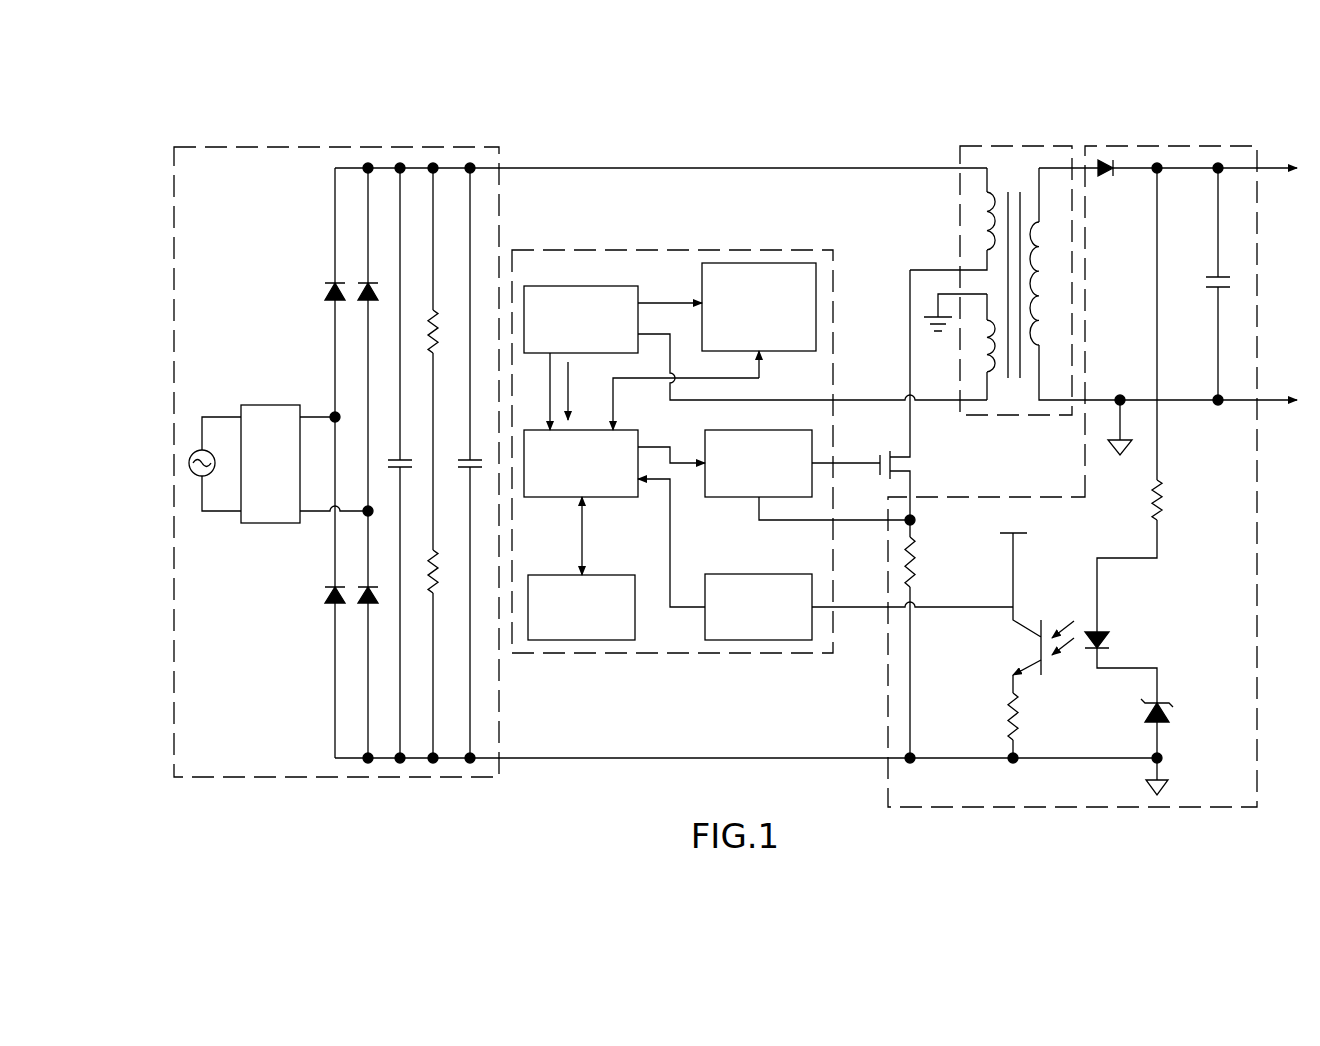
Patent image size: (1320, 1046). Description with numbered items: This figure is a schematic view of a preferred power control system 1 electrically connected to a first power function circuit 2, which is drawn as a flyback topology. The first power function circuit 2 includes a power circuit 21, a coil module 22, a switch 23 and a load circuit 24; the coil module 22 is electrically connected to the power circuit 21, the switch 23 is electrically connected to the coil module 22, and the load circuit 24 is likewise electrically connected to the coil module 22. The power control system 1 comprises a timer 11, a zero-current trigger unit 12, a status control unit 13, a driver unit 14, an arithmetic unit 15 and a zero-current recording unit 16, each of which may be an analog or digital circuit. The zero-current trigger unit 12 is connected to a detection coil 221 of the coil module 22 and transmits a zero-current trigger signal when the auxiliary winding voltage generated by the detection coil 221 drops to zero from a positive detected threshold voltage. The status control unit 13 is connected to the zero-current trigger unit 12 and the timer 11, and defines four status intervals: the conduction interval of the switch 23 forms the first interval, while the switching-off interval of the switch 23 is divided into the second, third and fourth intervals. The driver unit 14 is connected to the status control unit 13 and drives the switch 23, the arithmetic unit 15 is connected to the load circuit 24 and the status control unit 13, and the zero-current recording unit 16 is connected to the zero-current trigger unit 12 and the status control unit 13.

The power control system 1 is at (627, 655).
The timer 11 is at (545, 640).
The zero-current trigger unit 12 is at (620, 290).
The status control unit 13 is at (545, 497).
The driver unit 14 is at (722, 497).
The arithmetic unit 15 is at (722, 640).
The zero-current recording unit 16 is at (797, 268).
The first power function circuit 2 is at (1150, 70).
The power circuit 21 is at (470, 147).
The coil module 22 is at (968, 146).
The detection coil 221 is at (995, 376).
The switch 23 is at (880, 458).
The load circuit 24 is at (1140, 146).